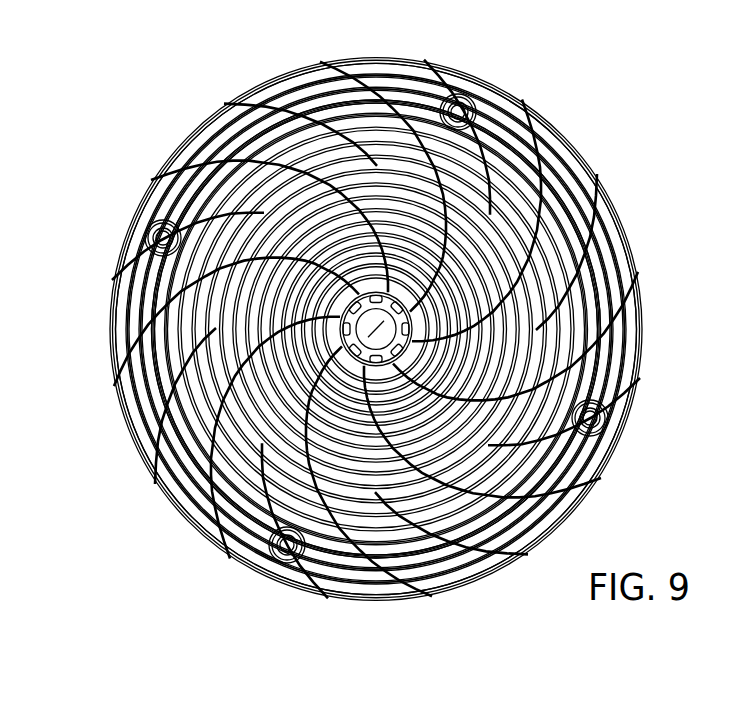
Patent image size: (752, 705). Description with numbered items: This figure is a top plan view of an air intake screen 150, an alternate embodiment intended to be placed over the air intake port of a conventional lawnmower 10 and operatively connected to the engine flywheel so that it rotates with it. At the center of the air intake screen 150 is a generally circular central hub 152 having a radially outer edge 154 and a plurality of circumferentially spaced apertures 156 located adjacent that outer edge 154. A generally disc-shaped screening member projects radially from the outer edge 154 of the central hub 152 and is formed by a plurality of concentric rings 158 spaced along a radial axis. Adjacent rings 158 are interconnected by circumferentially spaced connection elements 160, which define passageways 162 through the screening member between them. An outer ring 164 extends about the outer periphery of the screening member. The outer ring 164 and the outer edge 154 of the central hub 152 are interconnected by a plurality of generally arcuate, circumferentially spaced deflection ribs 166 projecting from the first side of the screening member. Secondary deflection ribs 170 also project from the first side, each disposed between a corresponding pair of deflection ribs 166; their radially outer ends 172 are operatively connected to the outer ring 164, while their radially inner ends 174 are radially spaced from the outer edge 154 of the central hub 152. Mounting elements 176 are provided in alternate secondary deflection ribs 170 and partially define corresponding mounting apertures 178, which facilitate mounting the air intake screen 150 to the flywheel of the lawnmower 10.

The fan 10 is at (354, 28).
The air intake screen 150 is at (172, 530).
The central hub 152 is at (296, 156).
The radially outer edge 154 is at (440, 556).
The apertures 156 is at (592, 215).
The concentric rings 158 is at (158, 465).
The connection elements 160 is at (142, 413).
The passageways 162 is at (196, 479).
The outer ring 164 is at (270, 561).
The deflection ribs 166 is at (226, 541).
The secondary deflection ribs 170 is at (292, 104).
The radially outer ends 172 is at (504, 560).
The radially inner ends 174 is at (390, 577).
The mounting elements 176 is at (464, 92).
The mounting apertures 178 is at (158, 227).